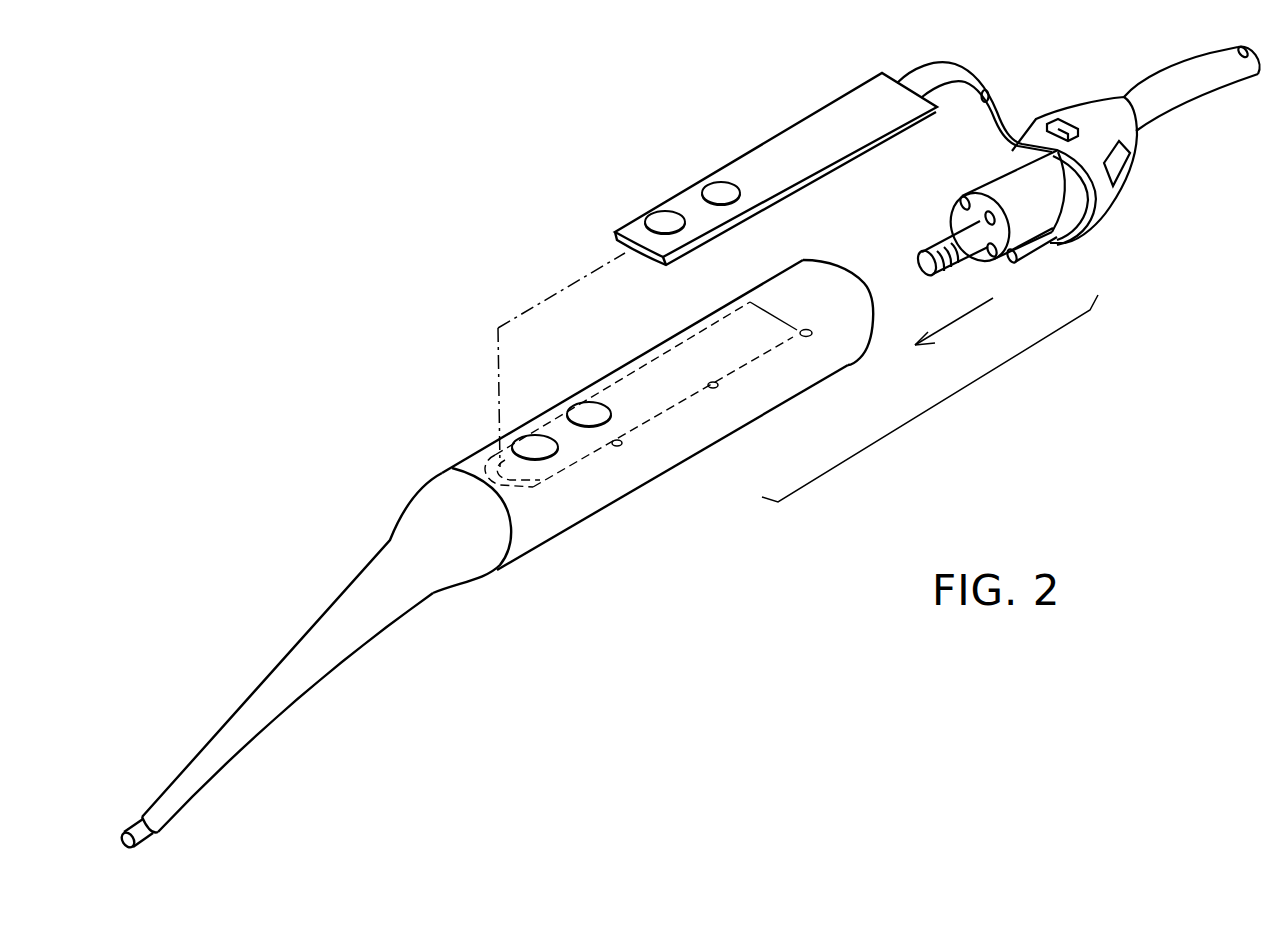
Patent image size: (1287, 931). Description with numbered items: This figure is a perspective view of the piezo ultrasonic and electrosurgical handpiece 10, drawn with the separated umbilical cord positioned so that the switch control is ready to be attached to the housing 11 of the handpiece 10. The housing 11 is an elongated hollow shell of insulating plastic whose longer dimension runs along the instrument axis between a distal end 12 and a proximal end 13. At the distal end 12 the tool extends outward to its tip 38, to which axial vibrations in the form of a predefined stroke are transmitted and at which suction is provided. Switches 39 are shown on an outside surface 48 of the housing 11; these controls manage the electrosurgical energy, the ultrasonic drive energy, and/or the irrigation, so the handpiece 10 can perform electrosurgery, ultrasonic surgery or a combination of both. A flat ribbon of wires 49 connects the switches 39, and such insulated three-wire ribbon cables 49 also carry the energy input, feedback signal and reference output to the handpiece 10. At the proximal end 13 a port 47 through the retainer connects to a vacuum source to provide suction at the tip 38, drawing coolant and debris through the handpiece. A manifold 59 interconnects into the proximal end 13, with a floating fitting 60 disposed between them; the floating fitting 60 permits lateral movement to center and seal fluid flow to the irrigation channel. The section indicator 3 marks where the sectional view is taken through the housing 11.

The section line 3- 3 is at (473, 407).
The piezo ultrasonic and electrosurgical handpiece 10 is at (593, 222).
The housing 11 is at (802, 385).
The distal end 12 is at (517, 560).
The proximal end 13 is at (867, 348).
The tip 38 is at (261, 661).
The switches 39 is at (668, 216).
The port 47 is at (915, 262).
The outside surface 48 is at (728, 420).
The flat ribbon of wires 49 is at (987, 98).
The manifold 59 is at (1182, 98).
The floating fitting 60 is at (1033, 252).